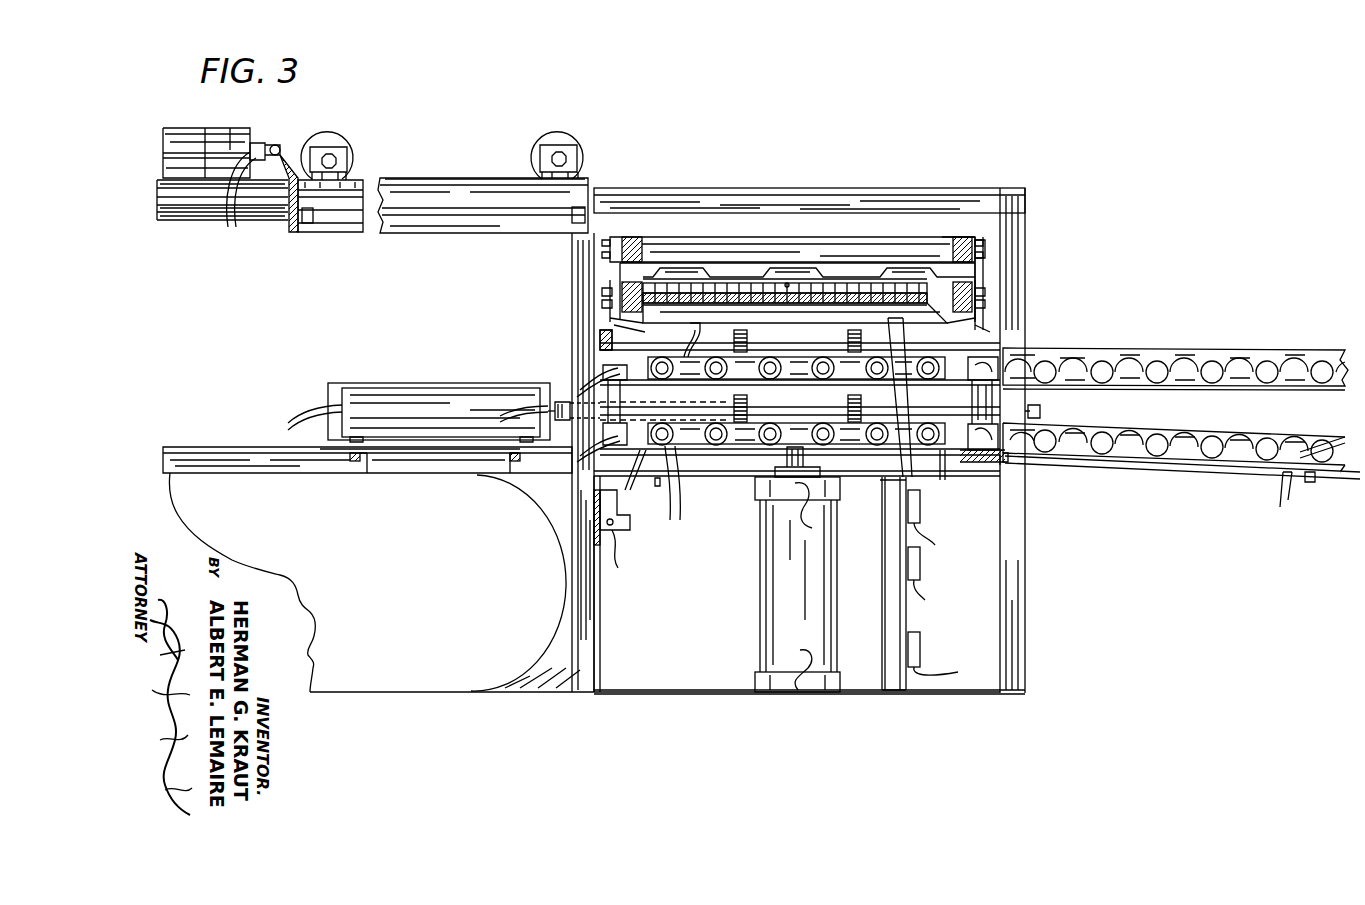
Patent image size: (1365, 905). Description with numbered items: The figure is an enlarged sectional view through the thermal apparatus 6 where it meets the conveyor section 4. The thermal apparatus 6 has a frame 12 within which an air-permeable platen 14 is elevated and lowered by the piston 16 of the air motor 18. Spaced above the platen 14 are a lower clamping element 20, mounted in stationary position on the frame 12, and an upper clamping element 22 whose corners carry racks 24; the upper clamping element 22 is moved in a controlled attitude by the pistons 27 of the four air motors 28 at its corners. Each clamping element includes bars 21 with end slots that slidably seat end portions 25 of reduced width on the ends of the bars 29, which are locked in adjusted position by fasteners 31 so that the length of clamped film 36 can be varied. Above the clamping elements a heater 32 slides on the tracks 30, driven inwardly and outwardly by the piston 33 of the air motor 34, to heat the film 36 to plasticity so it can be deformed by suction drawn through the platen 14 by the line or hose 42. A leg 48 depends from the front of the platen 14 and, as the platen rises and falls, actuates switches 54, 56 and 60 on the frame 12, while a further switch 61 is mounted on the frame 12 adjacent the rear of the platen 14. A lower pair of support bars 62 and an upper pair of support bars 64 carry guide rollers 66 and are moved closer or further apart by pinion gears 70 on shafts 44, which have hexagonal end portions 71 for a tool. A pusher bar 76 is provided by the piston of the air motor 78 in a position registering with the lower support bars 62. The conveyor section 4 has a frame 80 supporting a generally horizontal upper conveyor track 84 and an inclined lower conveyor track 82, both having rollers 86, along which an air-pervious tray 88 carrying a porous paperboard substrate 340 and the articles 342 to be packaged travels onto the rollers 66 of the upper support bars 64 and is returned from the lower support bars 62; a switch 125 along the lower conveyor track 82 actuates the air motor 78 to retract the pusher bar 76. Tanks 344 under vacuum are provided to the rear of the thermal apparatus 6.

The conveyor section 4 is at (1293, 343).
The thermal apparatus 6 is at (459, 174).
The frame 12 is at (562, 266).
The air-permeable platen 14 is at (1060, 272).
The piston 16 is at (772, 478).
The air motor 18 is at (758, 578).
The lower clamping element 20 is at (612, 290).
The bars 21 is at (977, 232).
The upper clamping element 22 is at (628, 240).
The racks 24 is at (610, 312).
The end portions of reduced width 25 is at (600, 305).
The pistons 27 is at (612, 328).
The air motors 28 is at (600, 372).
The bars 29 is at (920, 256).
The tracks 30 is at (603, 182).
The fasteners 31 is at (985, 250).
The heater 32 is at (383, 178).
The piston 33 is at (282, 147).
The air motor 34 is at (228, 128).
The film 36 is at (948, 237).
The line or hose 42 is at (682, 340).
The shafts 44 is at (925, 349).
The leg 48 is at (959, 403).
The switch 54 is at (920, 512).
The switch 56 is at (925, 655).
The switch 60 is at (925, 570).
The switch 61 is at (628, 514).
The lower pair of support or guide bars 62 is at (950, 455).
The upper pair of support or guide bars 64 is at (775, 385).
The guide rollers 66 is at (668, 470).
The pinion gears 70 is at (750, 350).
The hexagonal end portions 71 is at (1042, 412).
The pusher bar 76 is at (558, 445).
The air motor 78 is at (545, 450).
The frame 80 is at (1310, 480).
The lower conveyor track 82 is at (1208, 434).
The upper conveyor track 84 is at (1180, 360).
The rollers 86 is at (1067, 395).
The air-pervious tray 88 is at (708, 292).
The switch 125 is at (1330, 433).
The porous paperboard substrate 340 is at (790, 283).
The articles 342 is at (697, 270).
The tanks 344 is at (412, 610).